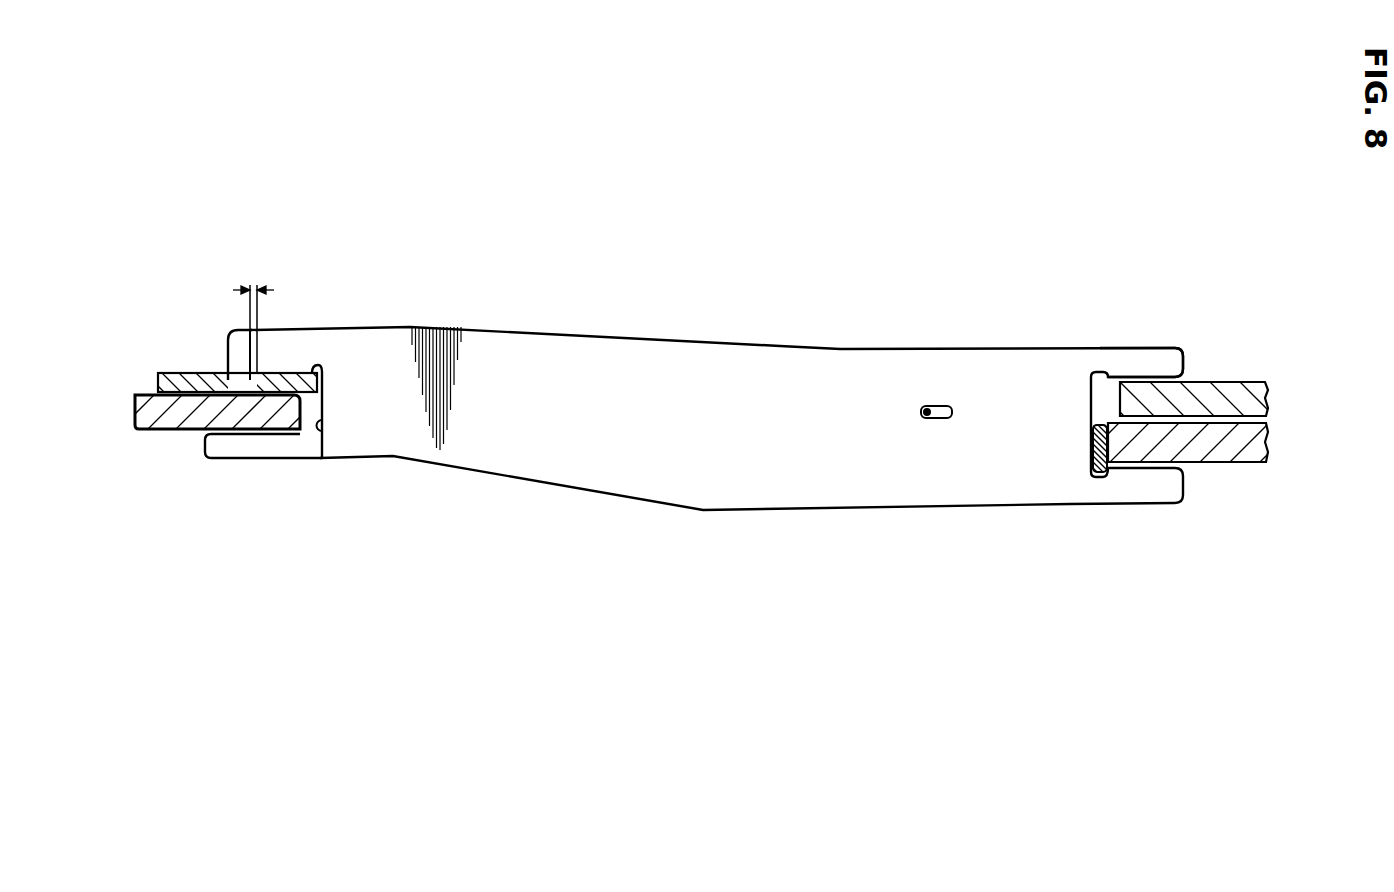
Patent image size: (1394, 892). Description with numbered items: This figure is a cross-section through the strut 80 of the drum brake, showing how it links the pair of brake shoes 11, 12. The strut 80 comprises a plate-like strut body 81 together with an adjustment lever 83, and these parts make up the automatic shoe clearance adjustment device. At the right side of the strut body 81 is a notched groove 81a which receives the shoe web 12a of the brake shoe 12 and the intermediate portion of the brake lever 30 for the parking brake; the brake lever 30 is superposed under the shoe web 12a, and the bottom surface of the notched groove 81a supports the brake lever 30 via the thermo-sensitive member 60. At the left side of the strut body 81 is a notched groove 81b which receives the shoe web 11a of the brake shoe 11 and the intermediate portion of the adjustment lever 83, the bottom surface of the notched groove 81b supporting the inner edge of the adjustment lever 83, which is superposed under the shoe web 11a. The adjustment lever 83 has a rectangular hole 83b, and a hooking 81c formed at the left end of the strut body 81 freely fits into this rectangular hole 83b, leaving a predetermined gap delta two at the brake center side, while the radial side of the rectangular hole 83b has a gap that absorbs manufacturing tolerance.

The brake shoe 11 is at (135, 398).
The shoe web 11a is at (172, 430).
The brake shoe 12 is at (1265, 380).
The shoe web 12a is at (1222, 382).
The brake lever 30 is at (1233, 463).
The thermo-sensitive member 60 is at (1090, 450).
The strut 80 is at (238, 329).
The strut body 81 is at (738, 357).
The notched groove 81a is at (1098, 393).
The notched groove 81b is at (316, 459).
The hooking 81c is at (240, 378).
The adjustment lever 83 is at (168, 372).
The rectangular hole 83b is at (240, 381).